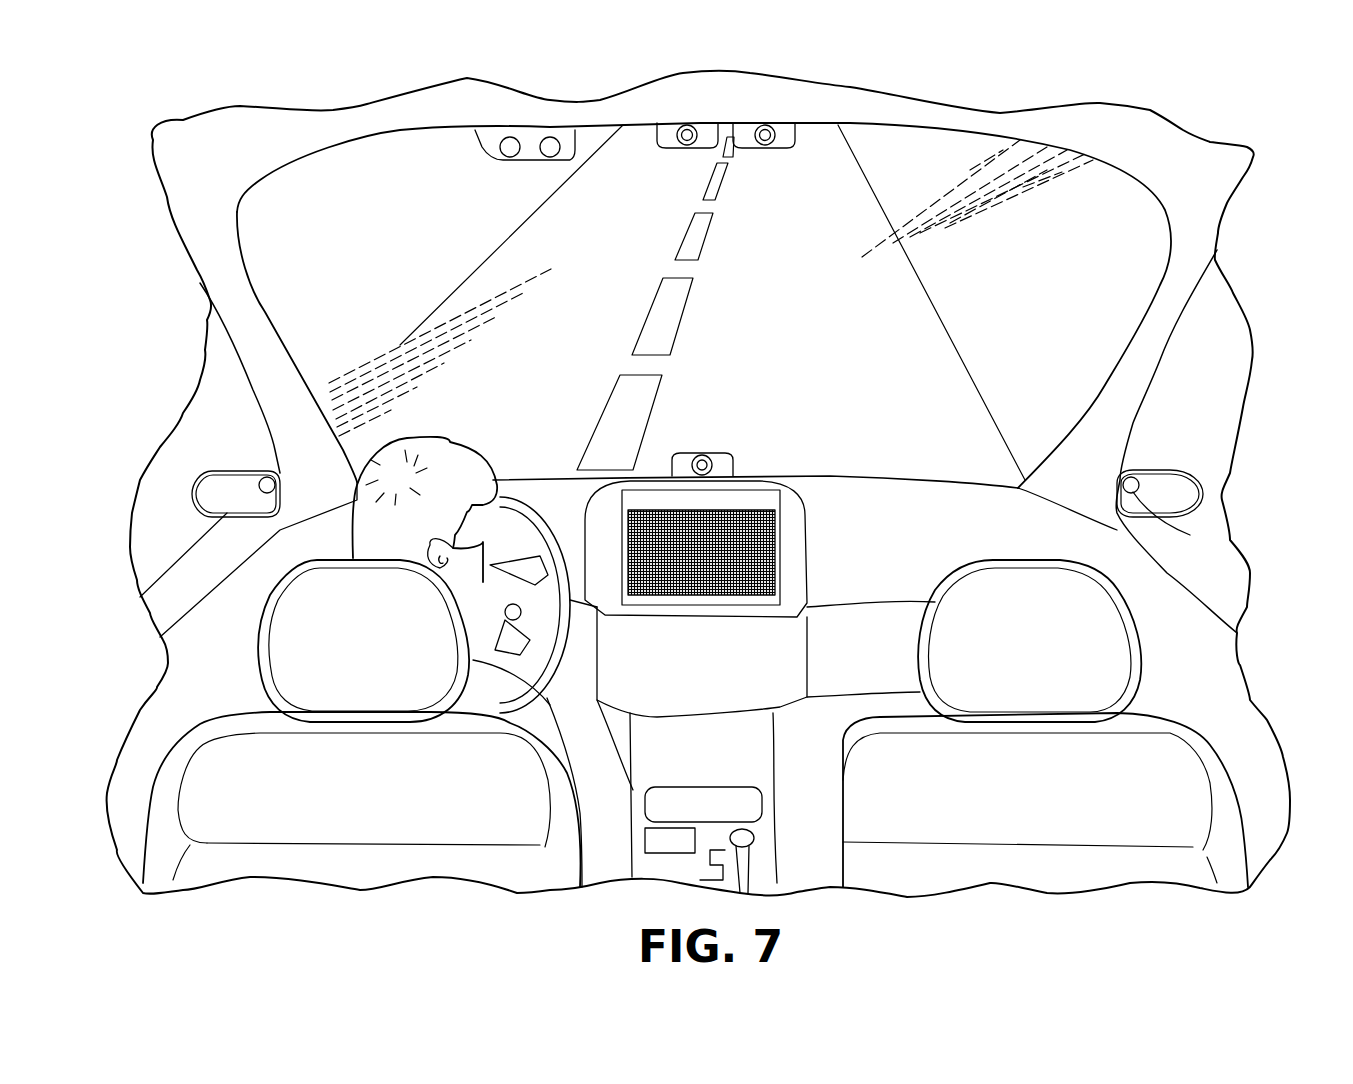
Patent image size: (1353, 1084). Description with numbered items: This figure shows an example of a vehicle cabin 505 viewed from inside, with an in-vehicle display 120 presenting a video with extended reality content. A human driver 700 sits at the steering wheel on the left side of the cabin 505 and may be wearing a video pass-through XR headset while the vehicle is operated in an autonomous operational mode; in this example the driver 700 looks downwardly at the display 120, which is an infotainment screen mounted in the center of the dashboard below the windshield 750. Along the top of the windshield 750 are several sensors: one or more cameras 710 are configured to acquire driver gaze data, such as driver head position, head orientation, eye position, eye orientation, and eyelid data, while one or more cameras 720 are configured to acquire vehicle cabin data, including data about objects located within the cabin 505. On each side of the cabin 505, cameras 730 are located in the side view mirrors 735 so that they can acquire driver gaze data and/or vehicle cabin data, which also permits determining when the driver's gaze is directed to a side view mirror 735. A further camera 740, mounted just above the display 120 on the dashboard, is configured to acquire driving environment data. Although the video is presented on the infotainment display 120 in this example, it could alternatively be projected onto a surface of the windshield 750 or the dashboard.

The vehicle cabin interior 505 is at (181, 113).
The windshield 750 is at (373, 167).
The cameras 710 is at (510, 157).
The cameras 720 is at (765, 145).
The human driver 700 is at (393, 470).
The cameras 730 is at (228, 473).
The side view mirrors 735 is at (210, 493).
The cameras 740 is at (704, 453).
The display 120 is at (762, 549).